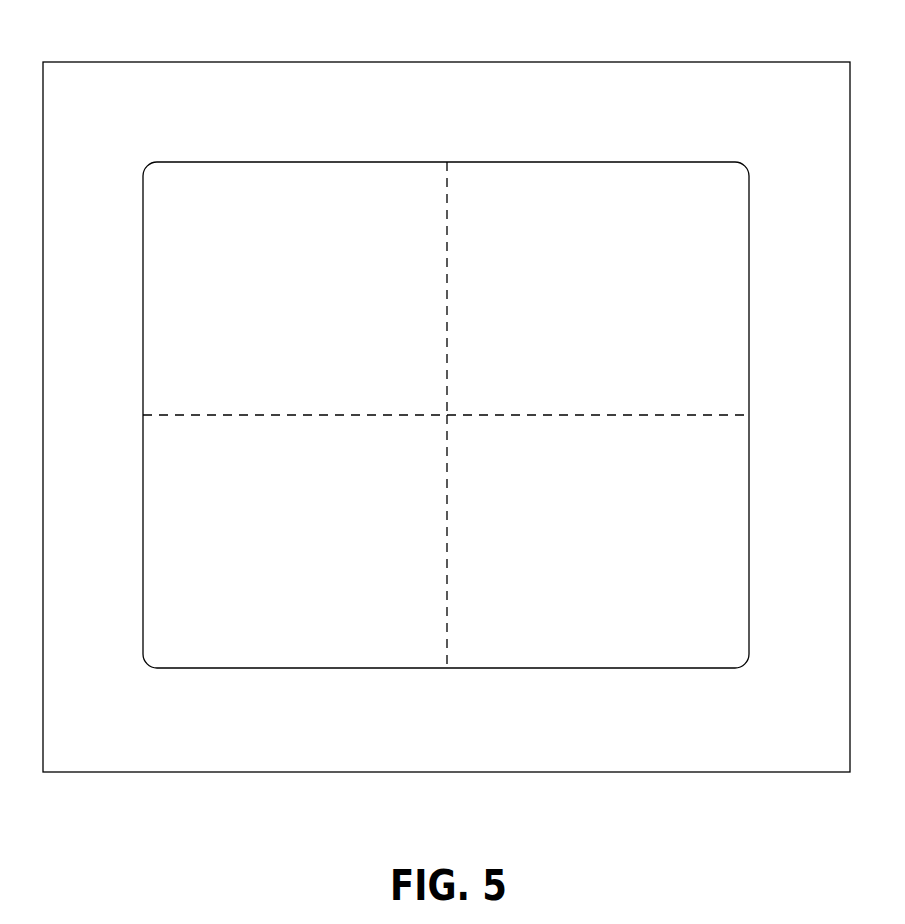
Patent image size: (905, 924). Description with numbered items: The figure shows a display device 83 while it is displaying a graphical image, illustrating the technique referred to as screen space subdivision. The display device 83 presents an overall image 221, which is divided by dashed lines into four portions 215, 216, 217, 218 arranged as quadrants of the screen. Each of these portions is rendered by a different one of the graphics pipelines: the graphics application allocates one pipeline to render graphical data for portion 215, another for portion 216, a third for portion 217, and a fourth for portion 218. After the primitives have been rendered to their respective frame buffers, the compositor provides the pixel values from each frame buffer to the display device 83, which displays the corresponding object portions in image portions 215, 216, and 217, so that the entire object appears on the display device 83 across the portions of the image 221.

The display device 83 is at (445, 62).
The overall image 221 is at (597, 161).
The image portion 215 is at (298, 297).
The image portion 216 is at (599, 297).
The image portion 217 is at (298, 556).
The image portion 218 is at (599, 556).